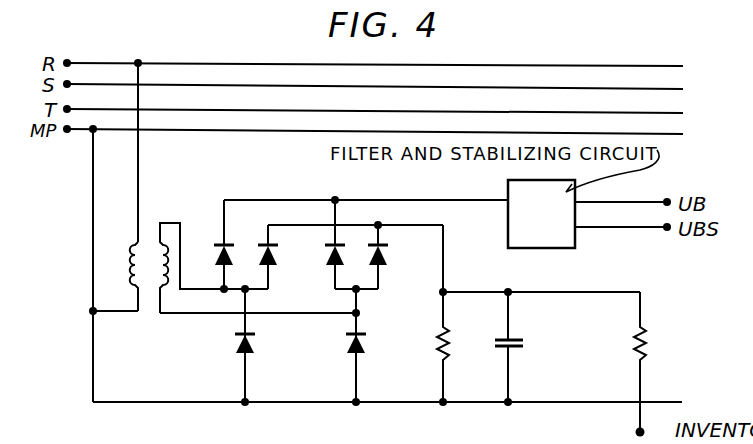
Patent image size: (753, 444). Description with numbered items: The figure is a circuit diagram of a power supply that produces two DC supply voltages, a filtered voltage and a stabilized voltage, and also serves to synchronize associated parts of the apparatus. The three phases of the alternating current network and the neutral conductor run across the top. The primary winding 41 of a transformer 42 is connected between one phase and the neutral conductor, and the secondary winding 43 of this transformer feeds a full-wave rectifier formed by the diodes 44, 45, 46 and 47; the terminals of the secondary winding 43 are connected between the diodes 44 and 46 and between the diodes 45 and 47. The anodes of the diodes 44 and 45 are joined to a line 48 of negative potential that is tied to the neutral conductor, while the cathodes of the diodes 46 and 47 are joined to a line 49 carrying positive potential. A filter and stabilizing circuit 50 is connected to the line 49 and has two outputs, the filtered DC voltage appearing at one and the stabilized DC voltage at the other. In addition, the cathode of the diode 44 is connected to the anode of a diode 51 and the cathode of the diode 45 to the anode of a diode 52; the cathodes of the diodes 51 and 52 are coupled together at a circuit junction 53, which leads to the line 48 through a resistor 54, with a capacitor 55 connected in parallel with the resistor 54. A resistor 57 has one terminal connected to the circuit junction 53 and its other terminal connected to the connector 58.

The primary winding 41 is at (134, 277).
The transformer 42 is at (229, 188).
The secondary winding 43 is at (167, 252).
The diode 44 is at (234, 345).
The diode 45 is at (345, 345).
The diode 46 is at (217, 257).
The diode 47 is at (327, 255).
The line 48 is at (276, 404).
The line 49 is at (282, 200).
The filter and stabilizing circuit 50 is at (558, 230).
The diode 51 is at (272, 278).
The diode 52 is at (381, 266).
The circuit junction 53 is at (444, 292).
The resistor 54 is at (438, 344).
The capacitor 55 is at (516, 347).
The resistor 57 is at (634, 340).
The connector 58 is at (636, 431).